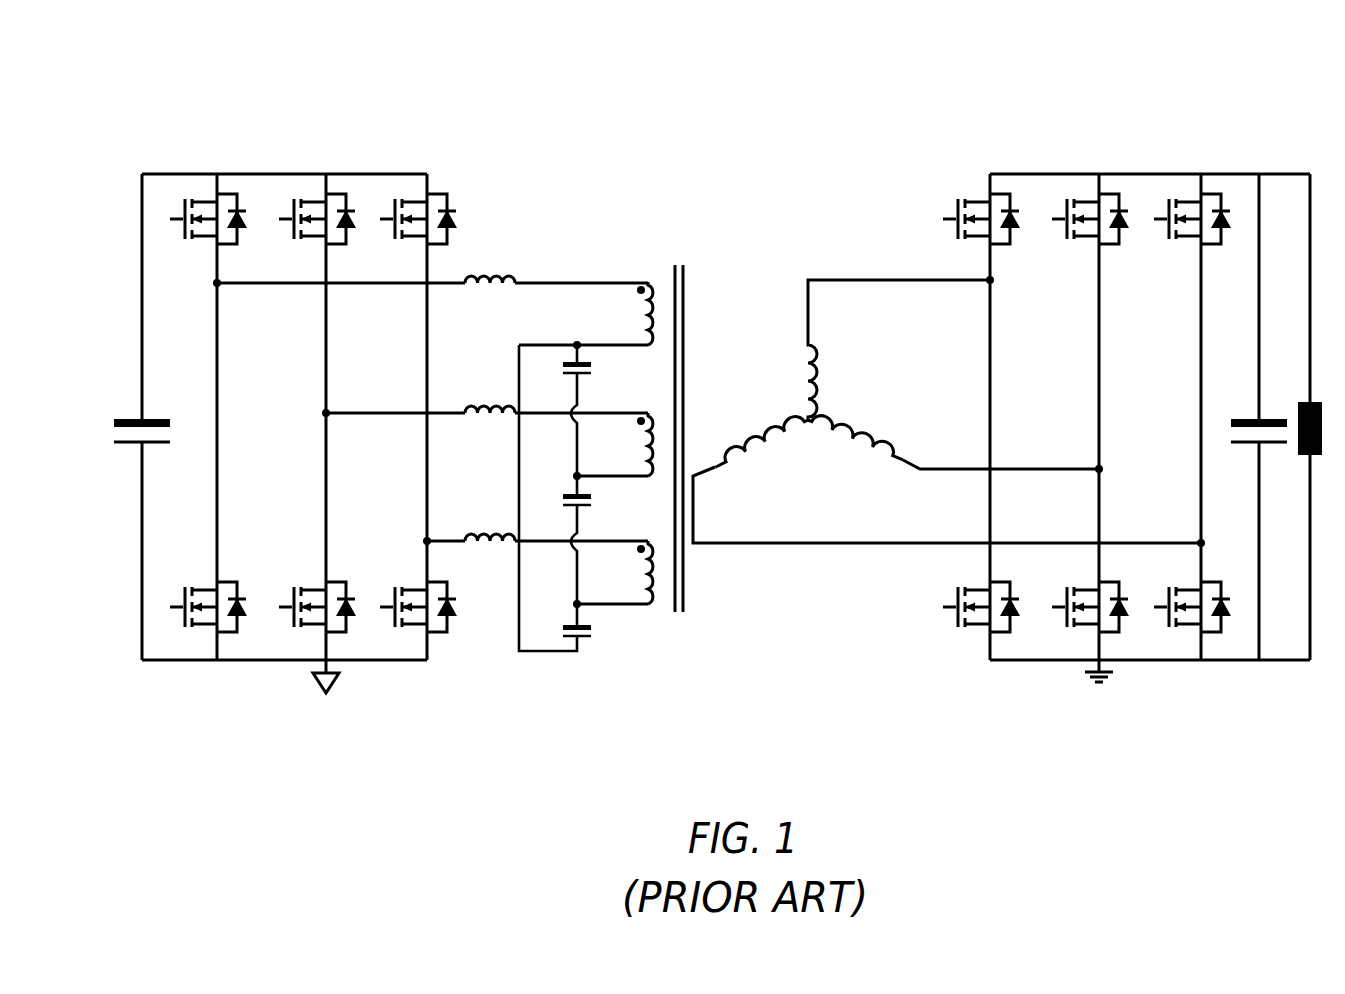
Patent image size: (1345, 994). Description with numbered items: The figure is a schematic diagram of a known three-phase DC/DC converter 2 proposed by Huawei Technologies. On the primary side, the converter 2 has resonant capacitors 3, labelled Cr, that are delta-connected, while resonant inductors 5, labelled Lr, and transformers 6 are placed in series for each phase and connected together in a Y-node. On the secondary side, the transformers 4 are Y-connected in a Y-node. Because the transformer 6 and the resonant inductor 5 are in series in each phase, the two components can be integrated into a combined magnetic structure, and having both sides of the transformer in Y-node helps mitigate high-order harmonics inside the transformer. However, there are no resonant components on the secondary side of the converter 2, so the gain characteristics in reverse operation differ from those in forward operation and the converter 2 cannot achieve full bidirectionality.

The three-phase DC/DC converter 2 is at (220, 141).
The resonant capacitor 3 is at (510, 341).
The transformer 4 is at (810, 380).
The resonant inductor 5 is at (502, 275).
The transformer 6 is at (647, 312).